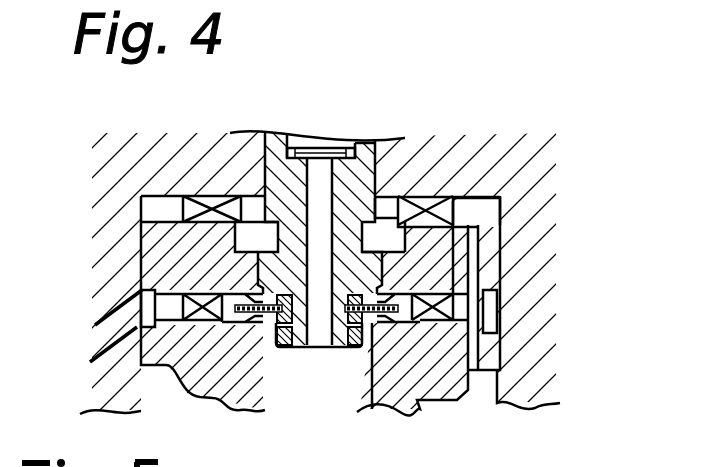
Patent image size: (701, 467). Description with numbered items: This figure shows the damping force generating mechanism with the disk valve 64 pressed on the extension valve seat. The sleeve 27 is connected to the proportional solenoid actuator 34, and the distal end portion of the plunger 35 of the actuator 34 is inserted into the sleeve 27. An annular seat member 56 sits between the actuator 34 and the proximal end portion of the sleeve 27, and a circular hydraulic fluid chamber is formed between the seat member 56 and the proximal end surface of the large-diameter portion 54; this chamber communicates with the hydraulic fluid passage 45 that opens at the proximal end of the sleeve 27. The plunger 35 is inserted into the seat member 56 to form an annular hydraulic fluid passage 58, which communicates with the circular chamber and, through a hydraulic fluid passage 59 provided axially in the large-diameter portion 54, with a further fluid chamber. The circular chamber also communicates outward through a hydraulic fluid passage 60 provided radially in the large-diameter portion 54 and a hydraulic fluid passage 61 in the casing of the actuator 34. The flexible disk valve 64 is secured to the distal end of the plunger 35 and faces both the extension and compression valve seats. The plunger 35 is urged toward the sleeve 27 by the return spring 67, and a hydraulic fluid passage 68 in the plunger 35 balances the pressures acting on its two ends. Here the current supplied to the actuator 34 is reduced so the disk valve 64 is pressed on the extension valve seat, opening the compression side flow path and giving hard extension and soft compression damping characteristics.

The sleeve 27 is at (428, 367).
The proportional solenoid actuator 34 is at (462, 155).
The plunger 35 is at (384, 150).
The hydraulic fluid passage 45 is at (313, 370).
The large-diameter portion 54 is at (478, 272).
The seat member 56 is at (203, 250).
The annular hydraulic fluid passage 58 is at (485, 228).
The hydraulic fluid passage 59 is at (473, 354).
The hydraulic fluid passage 60 is at (140, 306).
The hydraulic fluid passage 61 is at (107, 327).
The disk valve 64 is at (400, 308).
The return spring 67 is at (310, 135).
The hydraulic fluid passage 68 is at (317, 197).